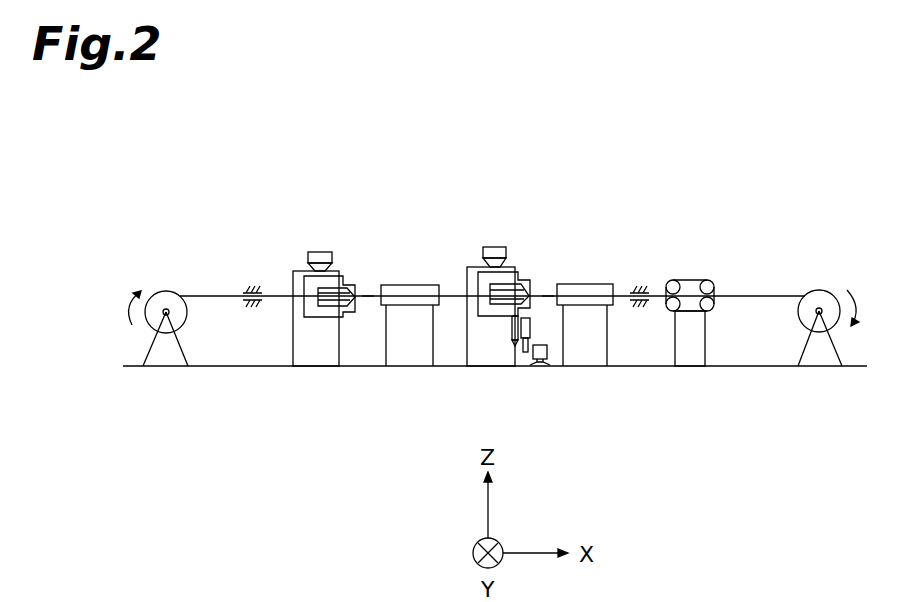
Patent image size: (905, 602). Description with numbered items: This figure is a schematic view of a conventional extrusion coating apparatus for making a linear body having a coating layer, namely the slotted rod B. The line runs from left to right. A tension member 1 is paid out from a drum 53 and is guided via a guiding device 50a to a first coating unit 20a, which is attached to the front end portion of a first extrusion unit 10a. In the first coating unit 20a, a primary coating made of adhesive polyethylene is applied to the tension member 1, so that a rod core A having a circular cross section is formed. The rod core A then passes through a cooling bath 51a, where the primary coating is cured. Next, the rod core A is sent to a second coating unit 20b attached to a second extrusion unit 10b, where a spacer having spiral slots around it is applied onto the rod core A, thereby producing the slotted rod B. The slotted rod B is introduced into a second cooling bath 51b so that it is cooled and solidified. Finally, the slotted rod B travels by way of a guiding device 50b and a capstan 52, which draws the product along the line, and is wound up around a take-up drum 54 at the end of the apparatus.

The tension member 1 is at (210, 296).
The first extrusion unit 10a is at (298, 270).
The second extrusion unit 10b is at (476, 267).
The first coating unit 20a is at (335, 278).
The second coating unit 20b is at (520, 278).
The guiding device 50a is at (245, 290).
The guiding device 50b is at (645, 287).
The cooling bath 51a is at (412, 284).
The cooling bath 51b is at (591, 284).
The capstan 52 is at (688, 279).
The drum 53 is at (160, 293).
The take-up drum 54 is at (822, 290).
The rod core A is at (368, 292).
The slotted rod B is at (548, 292).